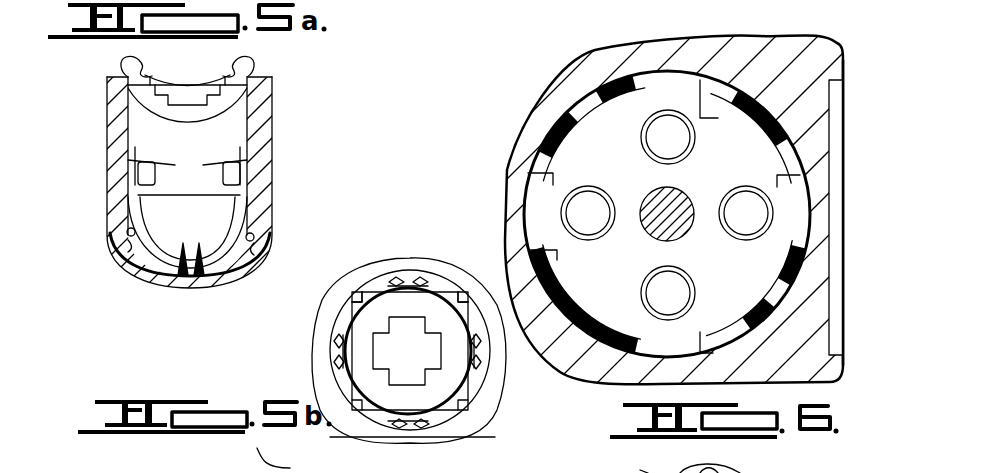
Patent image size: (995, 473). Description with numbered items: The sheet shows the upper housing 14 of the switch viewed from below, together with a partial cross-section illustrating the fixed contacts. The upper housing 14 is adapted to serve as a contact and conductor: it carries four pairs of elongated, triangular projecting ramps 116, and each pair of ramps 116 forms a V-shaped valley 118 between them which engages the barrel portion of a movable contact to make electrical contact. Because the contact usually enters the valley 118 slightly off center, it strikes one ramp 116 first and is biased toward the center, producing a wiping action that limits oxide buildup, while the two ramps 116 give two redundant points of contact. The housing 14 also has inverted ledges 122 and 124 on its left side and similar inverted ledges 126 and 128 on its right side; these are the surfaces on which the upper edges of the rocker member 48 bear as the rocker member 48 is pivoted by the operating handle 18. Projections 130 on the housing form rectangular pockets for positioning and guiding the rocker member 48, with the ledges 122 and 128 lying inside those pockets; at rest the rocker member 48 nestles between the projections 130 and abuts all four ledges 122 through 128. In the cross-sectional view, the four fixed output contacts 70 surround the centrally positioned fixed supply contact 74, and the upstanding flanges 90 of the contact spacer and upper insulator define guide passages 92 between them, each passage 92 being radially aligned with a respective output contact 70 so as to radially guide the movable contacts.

In FIG. 5A, the upper housing 14 is at (278, 181).
In FIG. 5B, the operating handle 18 is at (257, 450).
In FIG. 6, the operating handle 18 is at (636, 460).
In FIG. 6, the rocker member 48 is at (745, 460).
In FIG. 6, the fixed output contacts 70 is at (641, 143).
In FIG. 6, the fixed supply contact 74 is at (686, 208).
In FIG. 6, the upstanding flanges 90 is at (717, 117).
In FIG. 6, the slots or guide passages 92 is at (792, 192).
In FIG. 5A, the projecting ramps 116 is at (133, 243).
In FIG. 5B, the projecting ramps 116 is at (402, 278).
In FIG. 5B, the V-shaped valley 118 is at (407, 416).
In FIG. 5A, the inverted ledge 122 is at (163, 165).
In FIG. 5B, the inverted ledge 122 is at (350, 412).
In FIG. 5B, the inverted ledge 124 is at (365, 293).
In FIG. 5A, the inverted ledge 126 is at (262, 153).
In FIG. 5B, the inverted ledge 126 is at (470, 421).
In FIG. 5B, the inverted ledge 128 is at (458, 296).
In FIG. 5A, the projections 130 is at (228, 188).
In FIG. 5B, the projections 130 is at (352, 312).